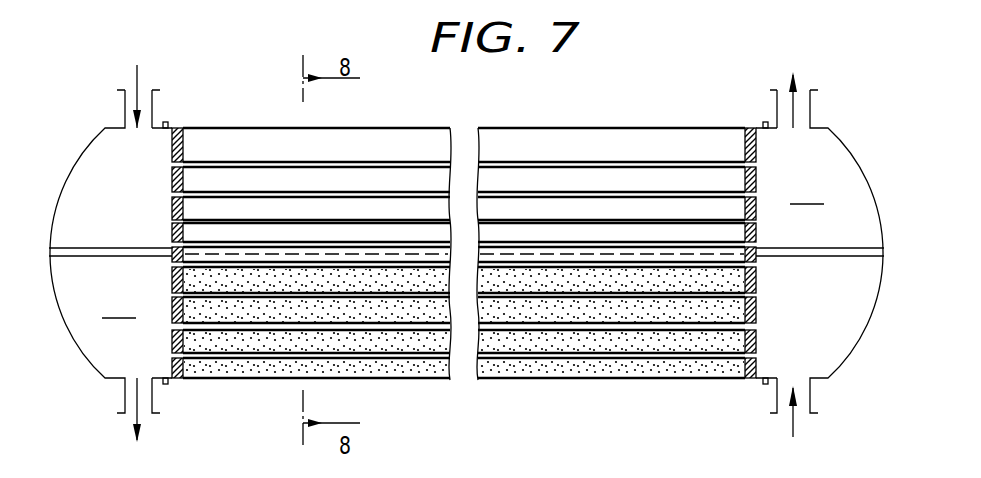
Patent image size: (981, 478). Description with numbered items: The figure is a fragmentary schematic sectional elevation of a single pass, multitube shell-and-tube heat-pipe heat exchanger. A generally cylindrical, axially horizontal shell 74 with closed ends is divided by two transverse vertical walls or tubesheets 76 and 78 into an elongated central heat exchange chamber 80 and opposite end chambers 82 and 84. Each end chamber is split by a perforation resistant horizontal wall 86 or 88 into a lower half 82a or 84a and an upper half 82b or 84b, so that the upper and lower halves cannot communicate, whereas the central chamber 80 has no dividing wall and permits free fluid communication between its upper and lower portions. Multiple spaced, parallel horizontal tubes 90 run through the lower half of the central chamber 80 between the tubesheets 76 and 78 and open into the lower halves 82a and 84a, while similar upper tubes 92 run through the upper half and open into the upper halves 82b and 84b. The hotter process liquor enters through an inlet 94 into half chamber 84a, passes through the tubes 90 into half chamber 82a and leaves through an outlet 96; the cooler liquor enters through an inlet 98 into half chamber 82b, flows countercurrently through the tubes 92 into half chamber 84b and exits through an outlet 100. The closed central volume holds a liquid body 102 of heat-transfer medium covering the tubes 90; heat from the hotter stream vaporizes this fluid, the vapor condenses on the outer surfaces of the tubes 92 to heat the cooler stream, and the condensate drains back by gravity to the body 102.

The shell 74 is at (545, 128).
The transverse vertical wall 76 is at (172, 207).
The transverse vertical wall 78 is at (757, 312).
The central heat exchange chamber 80 is at (620, 140).
The end chamber 82 is at (76, 155).
The lower half of end chamber 82a is at (119, 306).
The upper half of end chamber 82b is at (90, 182).
The end chamber 84 is at (865, 163).
The lower half of end chamber 84a is at (835, 337).
The upper half of end chamber 84b is at (807, 192).
The horizontal wall 86 is at (70, 258).
The horizontal wall 88 is at (858, 250).
The lower tubes 90 is at (377, 360).
The upper tubes 92 is at (363, 217).
The inlet 94 is at (810, 397).
The outlet 96 is at (125, 398).
The inlet 98 is at (125, 109).
The outlet 100 is at (810, 111).
The liquid-state body of heat-transfer medium 102 is at (635, 315).